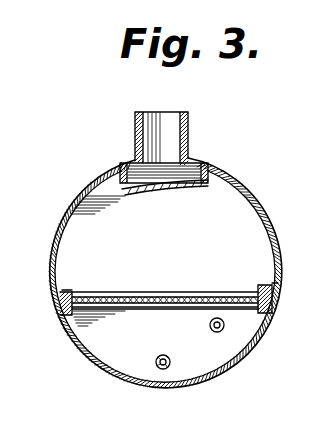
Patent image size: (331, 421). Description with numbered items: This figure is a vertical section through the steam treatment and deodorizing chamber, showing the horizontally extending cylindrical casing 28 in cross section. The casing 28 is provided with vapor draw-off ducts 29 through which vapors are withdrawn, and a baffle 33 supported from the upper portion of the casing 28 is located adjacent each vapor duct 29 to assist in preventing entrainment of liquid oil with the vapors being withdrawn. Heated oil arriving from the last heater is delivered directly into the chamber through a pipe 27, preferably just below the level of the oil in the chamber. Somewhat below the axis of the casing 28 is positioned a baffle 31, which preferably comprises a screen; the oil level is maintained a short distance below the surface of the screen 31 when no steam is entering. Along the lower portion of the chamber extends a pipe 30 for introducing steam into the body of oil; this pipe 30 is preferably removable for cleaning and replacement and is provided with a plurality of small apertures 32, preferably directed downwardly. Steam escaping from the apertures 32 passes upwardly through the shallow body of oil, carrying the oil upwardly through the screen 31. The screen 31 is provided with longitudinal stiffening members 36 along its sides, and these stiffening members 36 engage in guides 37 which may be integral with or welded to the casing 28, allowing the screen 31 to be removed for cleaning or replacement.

The pipe 27 is at (224, 329).
The cylindrical casing 28 is at (243, 148).
The vapor draw-off duct 29 is at (135, 132).
The pipe 30 is at (166, 355).
The baffle 31 is at (219, 291).
The small apertures 32 is at (178, 365).
The baffle 33 is at (125, 187).
The longitudinal stiffening members 36 is at (62, 310).
The guides 37 is at (63, 292).